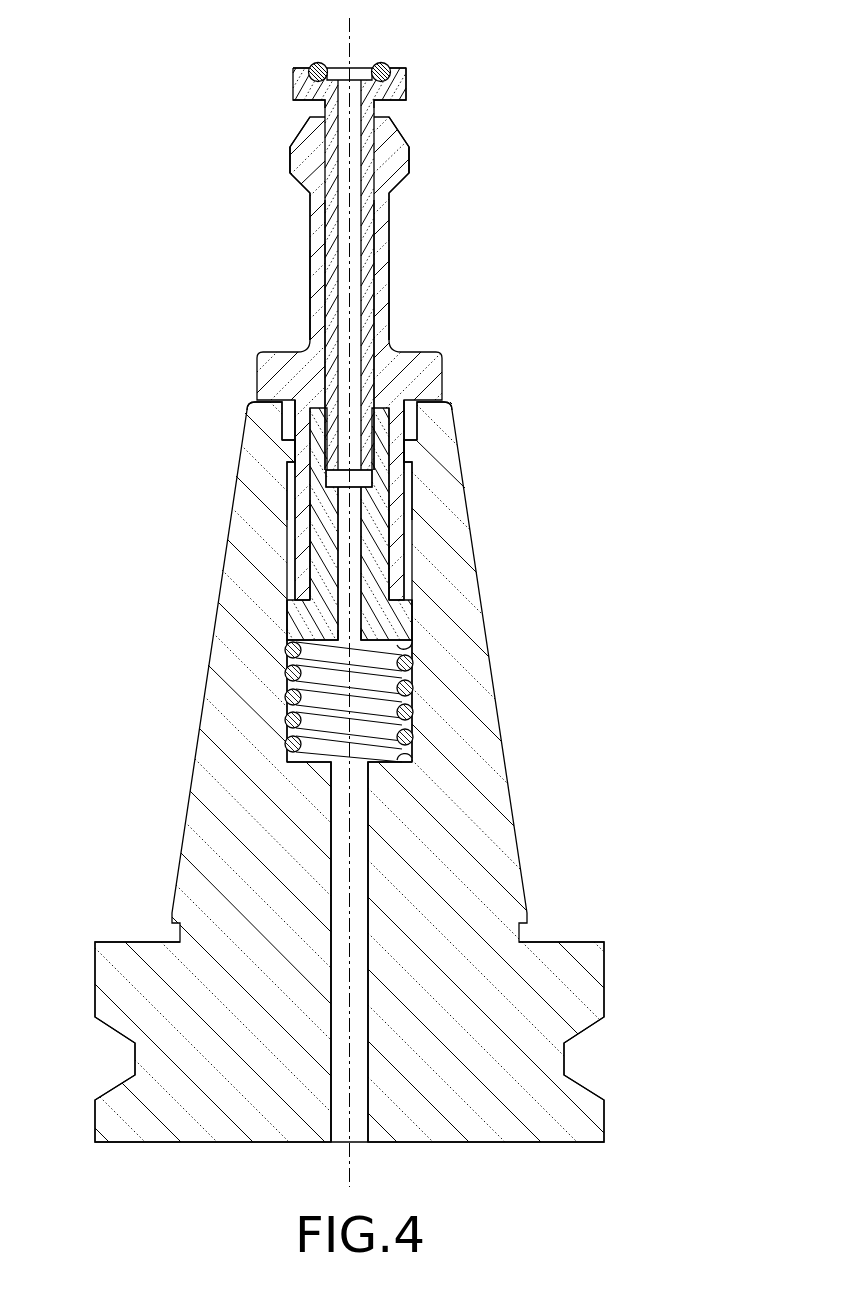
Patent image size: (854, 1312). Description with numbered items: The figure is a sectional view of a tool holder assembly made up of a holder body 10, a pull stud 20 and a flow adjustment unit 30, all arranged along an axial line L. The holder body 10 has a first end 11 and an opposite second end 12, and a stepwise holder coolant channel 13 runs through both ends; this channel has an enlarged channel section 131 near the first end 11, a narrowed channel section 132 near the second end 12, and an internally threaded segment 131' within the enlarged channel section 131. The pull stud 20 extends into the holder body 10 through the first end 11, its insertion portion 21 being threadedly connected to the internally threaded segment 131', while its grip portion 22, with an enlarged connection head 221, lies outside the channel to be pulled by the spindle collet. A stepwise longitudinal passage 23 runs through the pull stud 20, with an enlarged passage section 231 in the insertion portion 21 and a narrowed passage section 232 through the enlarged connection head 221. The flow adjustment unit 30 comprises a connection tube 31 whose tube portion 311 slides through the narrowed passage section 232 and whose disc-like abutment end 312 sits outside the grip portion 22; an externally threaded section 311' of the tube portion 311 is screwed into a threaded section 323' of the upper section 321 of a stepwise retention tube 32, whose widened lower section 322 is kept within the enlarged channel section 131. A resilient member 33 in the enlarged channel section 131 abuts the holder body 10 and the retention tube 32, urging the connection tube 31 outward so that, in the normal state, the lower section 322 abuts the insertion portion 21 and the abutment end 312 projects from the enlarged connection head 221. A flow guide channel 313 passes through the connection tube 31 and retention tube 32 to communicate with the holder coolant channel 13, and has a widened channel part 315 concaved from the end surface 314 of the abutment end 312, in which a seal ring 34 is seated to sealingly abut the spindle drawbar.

The holder body 10 is at (516, 842).
The first end 11 is at (458, 401).
The second end 12 is at (603, 1142).
The holder coolant channel 13 is at (368, 916).
The narrowed channel section 132 is at (349, 952).
The enlarged channel section 131 is at (445, 701).
The internally threaded segment 131' is at (258, 480).
The pull stud 20 is at (393, 288).
The insertion portion 21 is at (300, 545).
The grip portion 22 is at (411, 165).
The enlarged connection head 221 is at (349, 160).
The longitudinal passage 23 is at (383, 250).
The narrowed passage section 232 is at (349, 295).
The enlarged passage section 231 is at (300, 434).
The connection tube 31 is at (333, 216).
The tube portion 311 is at (349, 335).
The externally threaded section 311' is at (481, 452).
The abutment end 312 is at (408, 92).
The flow guide channel 313 is at (340, 151).
The end surface 314 is at (310, 64).
The widened channel part 315 is at (302, 75).
The flow adjustment unit 30 is at (386, 520).
The retention tube 32 is at (349, 550).
The upper section 321 is at (396, 542).
The lower section 322 is at (411, 620).
The threaded section 323' is at (349, 478).
The resilient member 33 is at (411, 735).
The seal ring 34 is at (389, 65).
The axial line L is at (348, 593).